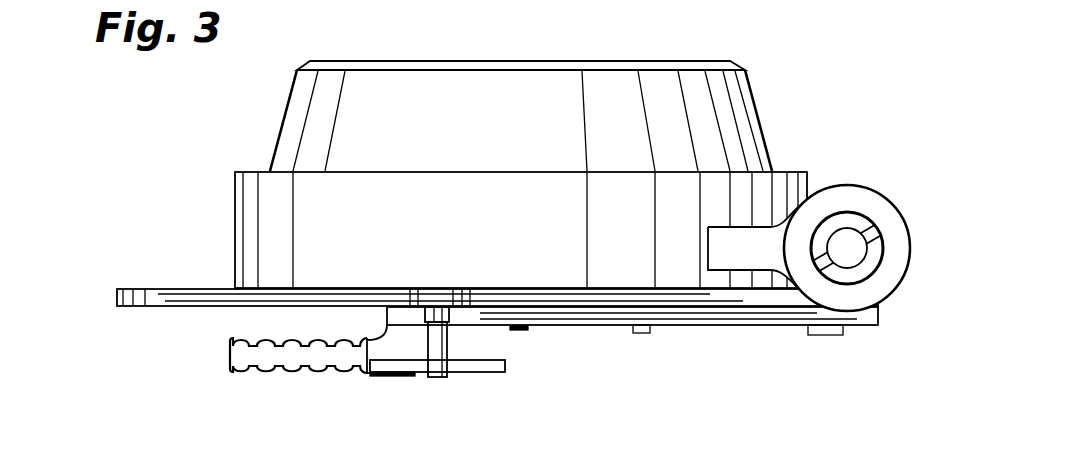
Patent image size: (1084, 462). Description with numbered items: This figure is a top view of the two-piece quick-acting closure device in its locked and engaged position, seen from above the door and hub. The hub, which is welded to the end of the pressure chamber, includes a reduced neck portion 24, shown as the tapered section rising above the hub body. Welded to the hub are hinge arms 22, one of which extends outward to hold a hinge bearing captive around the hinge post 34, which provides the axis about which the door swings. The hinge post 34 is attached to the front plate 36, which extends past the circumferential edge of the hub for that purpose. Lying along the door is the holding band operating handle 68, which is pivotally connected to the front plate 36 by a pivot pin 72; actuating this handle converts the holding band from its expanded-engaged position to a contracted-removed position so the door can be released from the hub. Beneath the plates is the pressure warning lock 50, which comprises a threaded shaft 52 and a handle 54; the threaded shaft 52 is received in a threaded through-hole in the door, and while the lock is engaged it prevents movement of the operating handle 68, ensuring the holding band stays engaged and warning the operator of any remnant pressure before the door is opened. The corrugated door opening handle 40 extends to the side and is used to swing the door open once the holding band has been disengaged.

The hinge arm 22 is at (740, 243).
The reduced neck portion 24 is at (517, 88).
The hinge post 34 is at (850, 242).
The front plate 36 is at (705, 326).
The door opening handle 40 is at (237, 362).
The pressure warning lock 50 is at (425, 381).
The threaded shaft 52 is at (450, 350).
The handle 54 is at (470, 373).
The holding band operating handle 68 is at (143, 289).
The pivot pin 72 is at (823, 336).